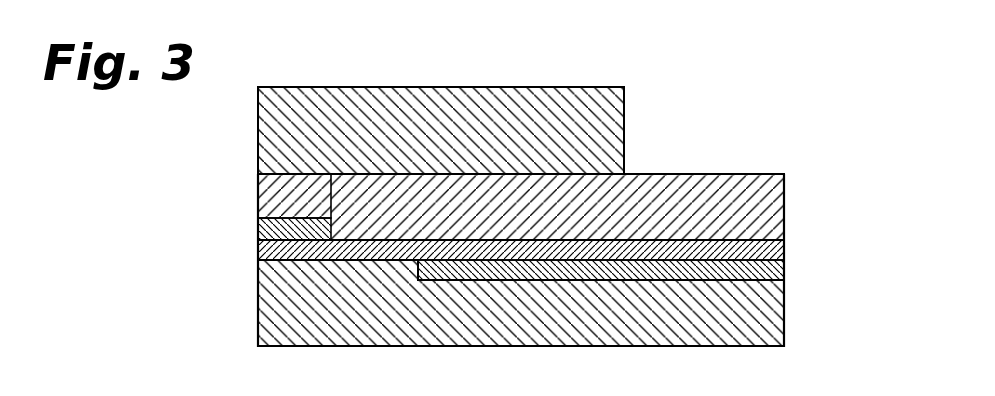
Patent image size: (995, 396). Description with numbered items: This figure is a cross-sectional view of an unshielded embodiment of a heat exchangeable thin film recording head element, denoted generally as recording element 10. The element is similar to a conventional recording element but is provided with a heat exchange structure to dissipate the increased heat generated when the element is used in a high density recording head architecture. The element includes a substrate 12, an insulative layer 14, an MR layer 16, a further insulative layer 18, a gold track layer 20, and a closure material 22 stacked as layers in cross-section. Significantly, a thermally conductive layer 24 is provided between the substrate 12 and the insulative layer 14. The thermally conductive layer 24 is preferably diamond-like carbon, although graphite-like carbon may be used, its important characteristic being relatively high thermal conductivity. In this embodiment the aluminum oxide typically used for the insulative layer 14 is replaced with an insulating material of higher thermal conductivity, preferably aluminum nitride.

The recording element 10 is at (768, 89).
The substrate 12 is at (758, 316).
The insulative layer 14 is at (752, 246).
The MR layer 16 is at (297, 230).
The insulative layer 18 is at (297, 210).
The gold track layer 20 is at (752, 212).
The closure material 22 is at (593, 144).
The thermally conductive layer 24 is at (753, 279).